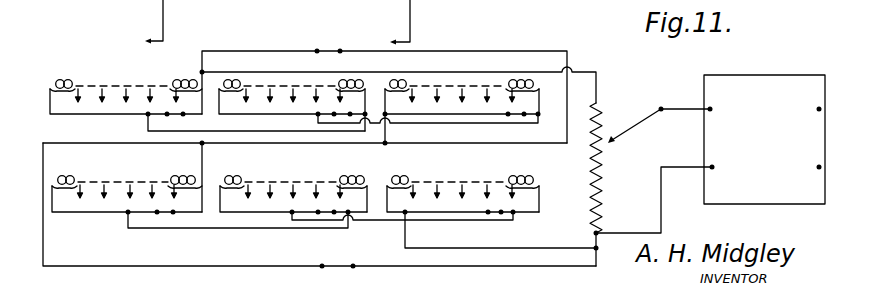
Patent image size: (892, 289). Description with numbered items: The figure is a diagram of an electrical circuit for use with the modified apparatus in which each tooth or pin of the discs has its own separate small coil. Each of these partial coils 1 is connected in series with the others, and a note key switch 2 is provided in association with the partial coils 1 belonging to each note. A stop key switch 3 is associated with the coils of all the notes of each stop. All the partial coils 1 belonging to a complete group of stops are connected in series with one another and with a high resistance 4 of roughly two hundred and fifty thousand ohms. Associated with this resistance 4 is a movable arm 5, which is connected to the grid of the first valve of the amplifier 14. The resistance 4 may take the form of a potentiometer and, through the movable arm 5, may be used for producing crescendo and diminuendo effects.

The partial coil 1 is at (220, 83).
The note key switch 2 is at (168, 115).
The stop key switch 3 is at (333, 51).
The high resistance 4 is at (603, 118).
The movable arm 5 is at (626, 129).
The amplifier 14 is at (765, 90).